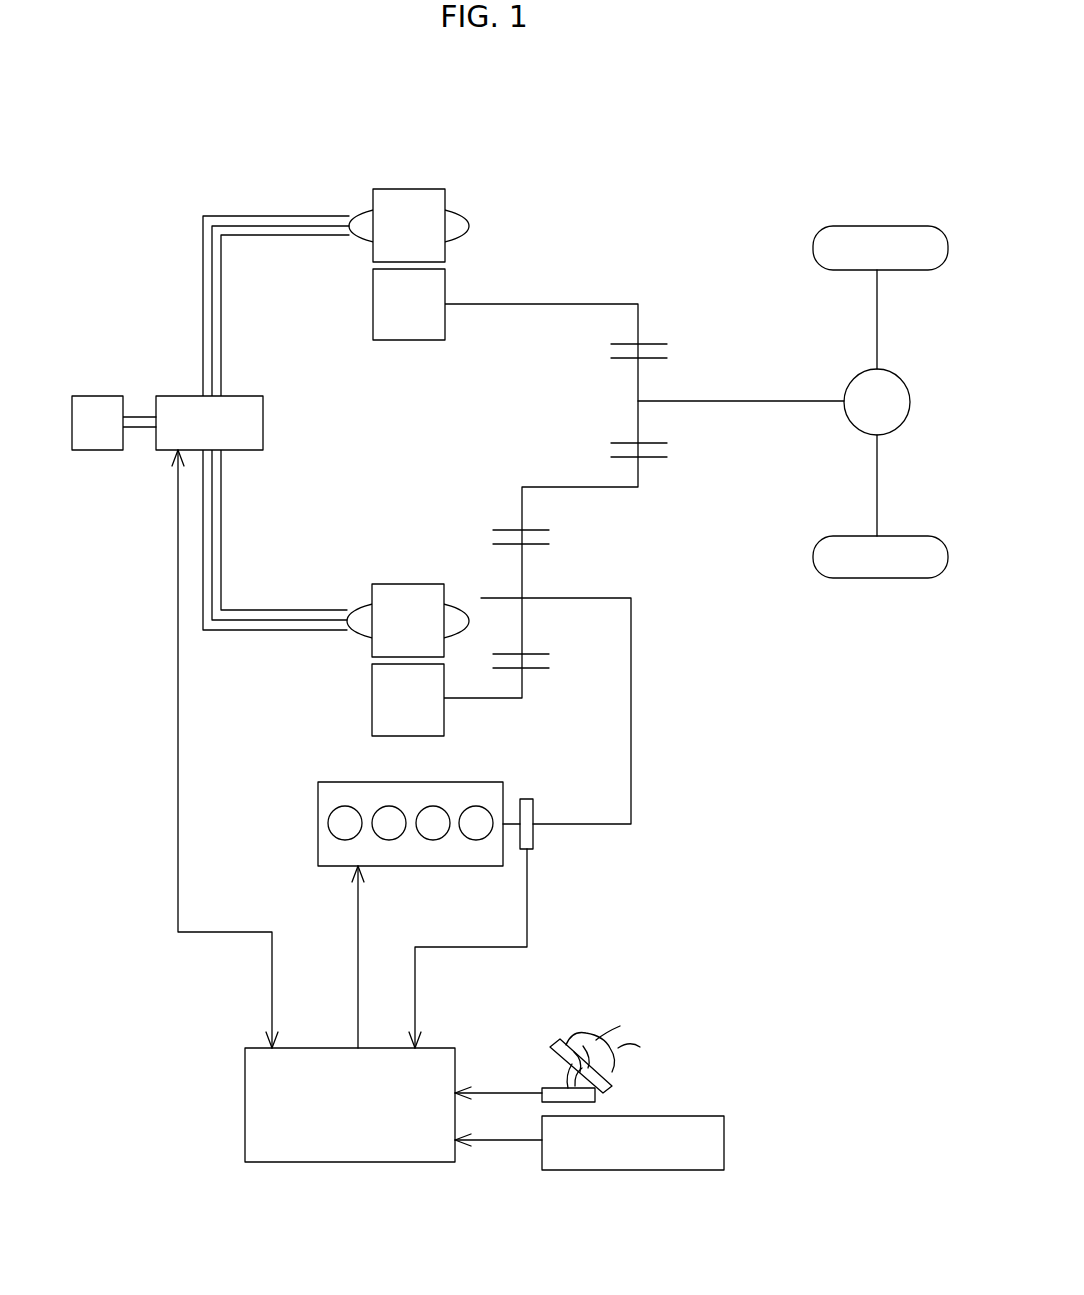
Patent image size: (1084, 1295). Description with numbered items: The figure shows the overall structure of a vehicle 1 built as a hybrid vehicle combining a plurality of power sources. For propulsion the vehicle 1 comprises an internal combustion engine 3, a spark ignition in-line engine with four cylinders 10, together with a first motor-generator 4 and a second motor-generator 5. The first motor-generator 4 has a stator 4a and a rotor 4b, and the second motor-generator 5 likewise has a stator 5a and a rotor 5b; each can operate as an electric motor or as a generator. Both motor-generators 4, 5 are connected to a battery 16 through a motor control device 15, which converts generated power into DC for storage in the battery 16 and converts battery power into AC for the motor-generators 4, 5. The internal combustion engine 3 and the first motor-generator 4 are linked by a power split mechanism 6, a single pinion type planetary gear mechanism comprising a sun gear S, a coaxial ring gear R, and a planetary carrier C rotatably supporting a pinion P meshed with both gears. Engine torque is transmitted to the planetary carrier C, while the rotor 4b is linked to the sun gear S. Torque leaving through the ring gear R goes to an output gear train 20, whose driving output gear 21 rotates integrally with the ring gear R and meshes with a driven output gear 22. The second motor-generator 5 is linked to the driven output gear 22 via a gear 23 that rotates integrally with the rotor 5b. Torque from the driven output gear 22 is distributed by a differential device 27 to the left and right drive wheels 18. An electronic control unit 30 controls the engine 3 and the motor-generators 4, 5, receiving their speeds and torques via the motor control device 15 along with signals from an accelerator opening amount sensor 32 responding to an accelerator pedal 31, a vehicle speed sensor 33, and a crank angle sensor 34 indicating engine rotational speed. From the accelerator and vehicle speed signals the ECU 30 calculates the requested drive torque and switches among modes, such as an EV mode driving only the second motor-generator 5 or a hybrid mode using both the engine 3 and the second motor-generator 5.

The vehicle 1 is at (596, 141).
The internal combustion engine 3 is at (394, 814).
The first motor-generator 4 is at (415, 630).
The stator 4a is at (416, 594).
The rotor 4b is at (433, 725).
The second motor-generator 5 is at (392, 217).
The stator 5a is at (414, 196).
The rotor 5b is at (374, 313).
The power split mechanism 6 is at (508, 584).
The cylinders 10 is at (433, 834).
The motor control device 15 is at (175, 398).
The battery 16 is at (98, 398).
The drive wheels 18 is at (862, 226).
The output gear train 20 is at (575, 438).
The driving output gear 21 is at (618, 461).
The driven output gear 22 is at (622, 442).
The gear 23 is at (650, 343).
The differential device 27 is at (851, 376).
The electronic control unit 30 is at (245, 1100).
The accelerator pedal 31 is at (557, 1042).
The accelerator opening amount sensor 32 is at (597, 1097).
The vehicle speed sensor 33 is at (727, 1142).
The crank angle sensor 34 is at (535, 848).
The ring gear R is at (545, 525).
The pinion P is at (523, 572).
The sun gear S is at (543, 670).
The planetary carrier C is at (631, 637).